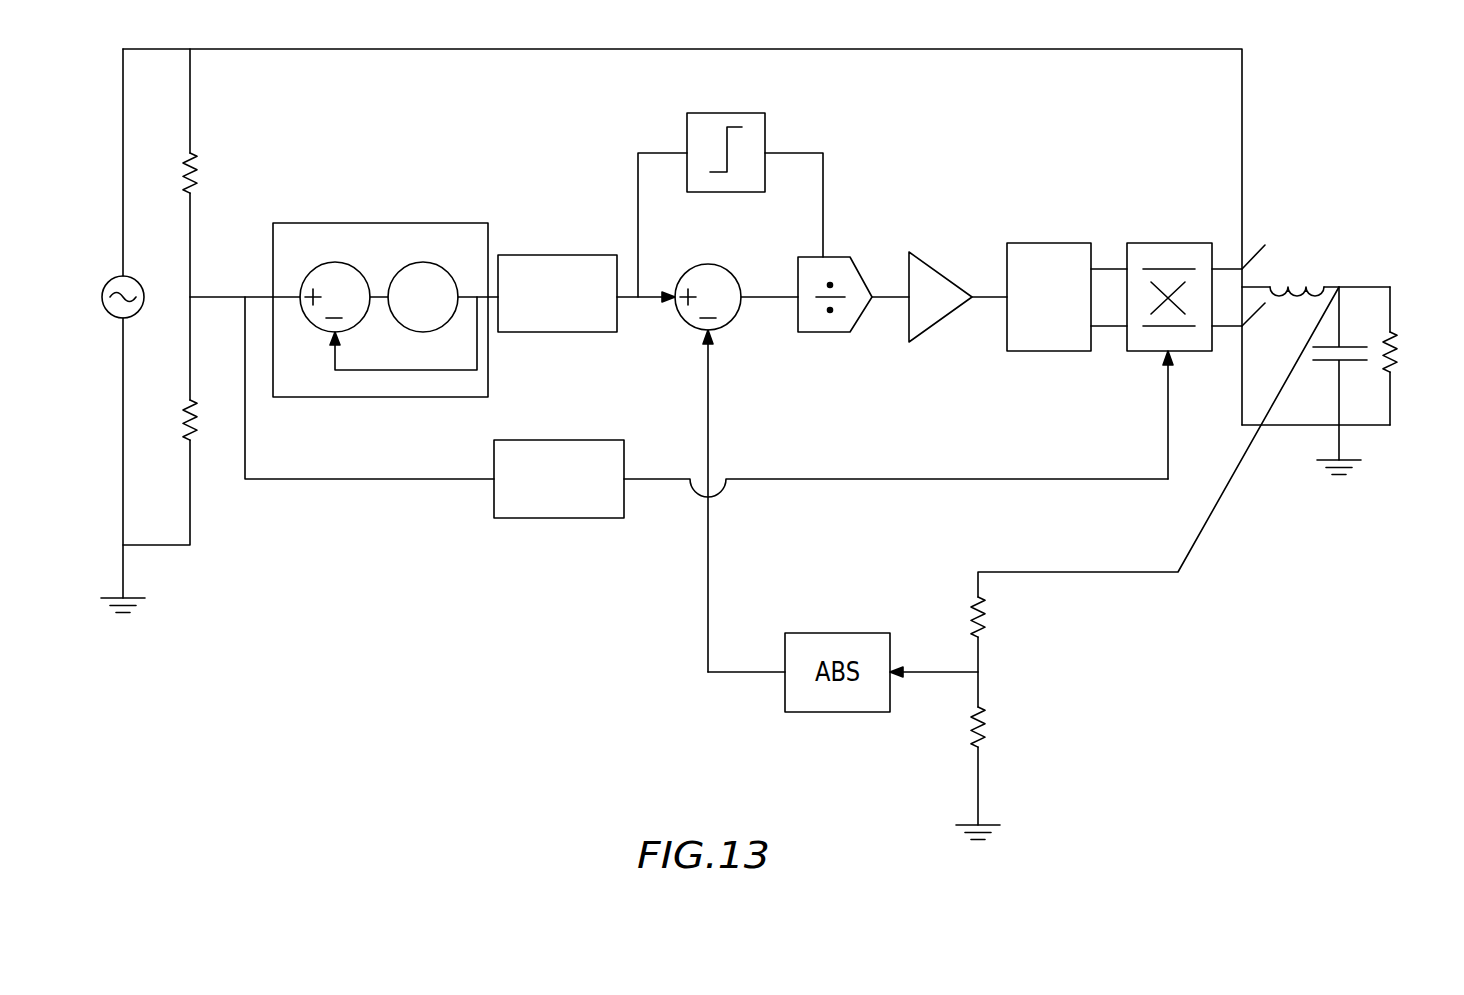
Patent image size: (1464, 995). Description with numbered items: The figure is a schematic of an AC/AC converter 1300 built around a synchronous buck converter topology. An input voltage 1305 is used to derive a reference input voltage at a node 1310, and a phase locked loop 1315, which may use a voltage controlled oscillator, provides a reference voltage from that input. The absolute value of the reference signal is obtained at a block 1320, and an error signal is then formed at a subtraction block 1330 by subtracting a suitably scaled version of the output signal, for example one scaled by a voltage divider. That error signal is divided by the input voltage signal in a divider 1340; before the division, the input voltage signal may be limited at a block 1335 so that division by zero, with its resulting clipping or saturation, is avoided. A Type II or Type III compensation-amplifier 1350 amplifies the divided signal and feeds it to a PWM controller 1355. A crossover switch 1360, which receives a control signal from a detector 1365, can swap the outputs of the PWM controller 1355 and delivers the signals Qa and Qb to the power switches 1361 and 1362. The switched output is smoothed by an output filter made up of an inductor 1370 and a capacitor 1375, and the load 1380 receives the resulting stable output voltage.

The AC/AC converter 1300 is at (408, 623).
The input voltage 1305 is at (141, 285).
The node 1310 is at (245, 297).
The phase locked loop 1315 is at (383, 223).
The block 1320 is at (535, 255).
The block 1330 is at (709, 264).
The block 1335 is at (727, 113).
The divider 1340 is at (825, 332).
The compensation-amplifier 1350 is at (941, 320).
The PWM controller 1355 is at (1060, 351).
The crossover switch 1360 is at (1168, 243).
The switch 1361 is at (1250, 254).
The switch 1362 is at (1283, 330).
The detector 1365 is at (557, 518).
The inductor 1370 is at (1302, 283).
The capacitor 1375 is at (1328, 364).
The load 1380 is at (1392, 318).